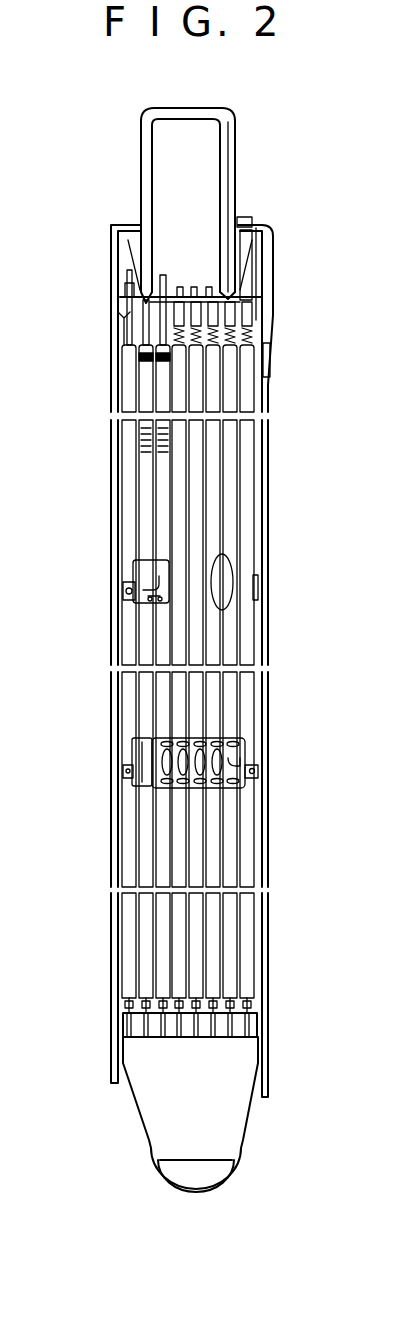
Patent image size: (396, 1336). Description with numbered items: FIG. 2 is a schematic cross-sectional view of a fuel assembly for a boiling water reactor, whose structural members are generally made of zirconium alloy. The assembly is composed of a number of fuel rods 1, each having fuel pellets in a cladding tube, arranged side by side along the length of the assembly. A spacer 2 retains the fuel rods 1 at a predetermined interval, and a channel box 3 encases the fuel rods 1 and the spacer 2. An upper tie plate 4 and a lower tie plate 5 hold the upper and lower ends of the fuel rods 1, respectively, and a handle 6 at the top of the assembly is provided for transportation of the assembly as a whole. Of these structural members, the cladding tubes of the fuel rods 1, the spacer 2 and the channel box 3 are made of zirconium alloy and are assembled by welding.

The fuel rods 1 is at (246, 699).
The spacer 2 is at (244, 765).
The channel box 3 is at (110, 478).
The upper tie plate 4 is at (124, 283).
The lower tie plate 5 is at (118, 1093).
The handle 6 is at (236, 143).